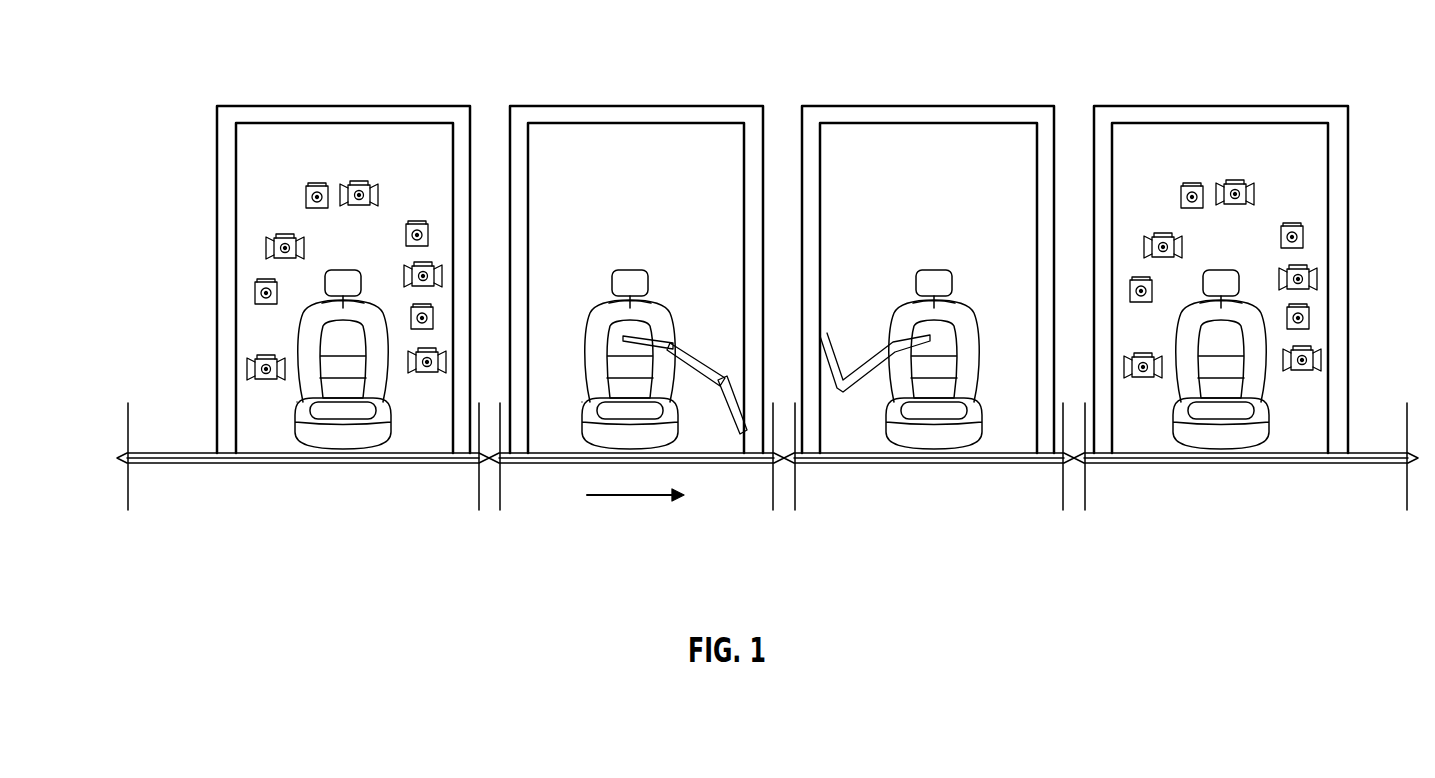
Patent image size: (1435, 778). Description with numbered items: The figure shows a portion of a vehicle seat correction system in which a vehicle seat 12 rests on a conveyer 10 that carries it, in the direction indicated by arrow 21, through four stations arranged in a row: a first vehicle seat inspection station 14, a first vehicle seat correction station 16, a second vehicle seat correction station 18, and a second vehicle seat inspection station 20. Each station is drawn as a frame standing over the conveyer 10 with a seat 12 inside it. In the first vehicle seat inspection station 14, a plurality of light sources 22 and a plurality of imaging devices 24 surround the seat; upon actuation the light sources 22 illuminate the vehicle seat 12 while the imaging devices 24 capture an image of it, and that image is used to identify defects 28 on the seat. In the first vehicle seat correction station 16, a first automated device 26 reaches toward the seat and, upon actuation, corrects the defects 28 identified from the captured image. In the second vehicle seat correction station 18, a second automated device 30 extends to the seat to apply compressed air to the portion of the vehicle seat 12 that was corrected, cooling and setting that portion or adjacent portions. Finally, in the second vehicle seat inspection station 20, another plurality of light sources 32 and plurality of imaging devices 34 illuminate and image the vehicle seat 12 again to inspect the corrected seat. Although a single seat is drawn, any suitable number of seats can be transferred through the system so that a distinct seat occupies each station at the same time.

The conveyer 10 is at (150, 477).
The vehicle seat 12 is at (314, 285).
The first vehicle seat inspection station 14 is at (346, 51).
The first vehicle seat correction station 16 is at (625, 51).
The second vehicle seat correction station 18 is at (900, 51).
The second vehicle seat inspection station 20 is at (1178, 51).
The arrow 21 is at (622, 497).
The light sources 22 is at (361, 180).
The imaging devices 24 is at (306, 197).
The first automated device 26 is at (700, 360).
The defects 28 is at (296, 402).
The second automated device 30 is at (872, 350).
The light sources 32 is at (1152, 233).
The imaging devices 34 is at (1192, 185).